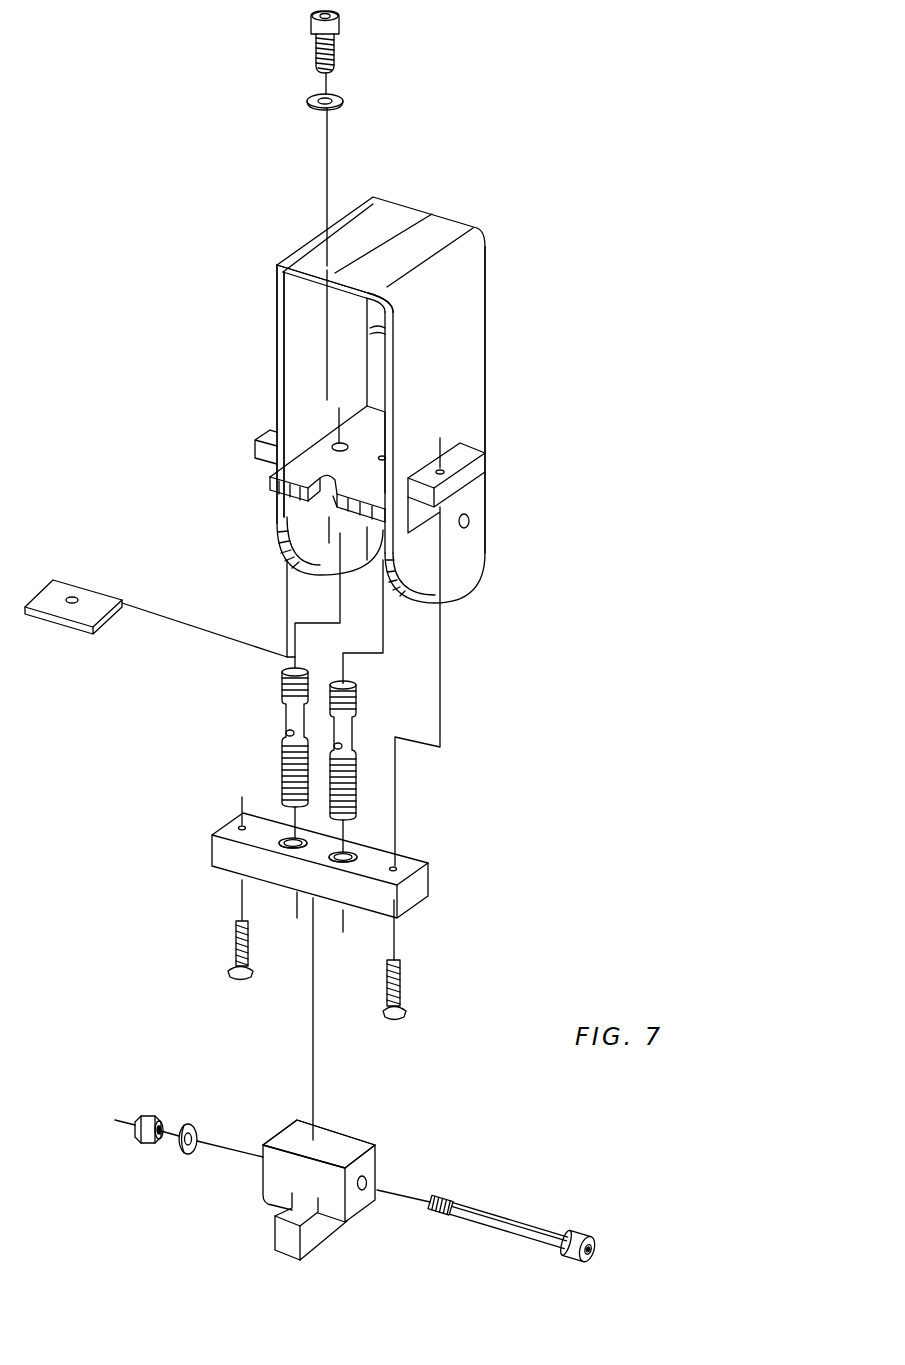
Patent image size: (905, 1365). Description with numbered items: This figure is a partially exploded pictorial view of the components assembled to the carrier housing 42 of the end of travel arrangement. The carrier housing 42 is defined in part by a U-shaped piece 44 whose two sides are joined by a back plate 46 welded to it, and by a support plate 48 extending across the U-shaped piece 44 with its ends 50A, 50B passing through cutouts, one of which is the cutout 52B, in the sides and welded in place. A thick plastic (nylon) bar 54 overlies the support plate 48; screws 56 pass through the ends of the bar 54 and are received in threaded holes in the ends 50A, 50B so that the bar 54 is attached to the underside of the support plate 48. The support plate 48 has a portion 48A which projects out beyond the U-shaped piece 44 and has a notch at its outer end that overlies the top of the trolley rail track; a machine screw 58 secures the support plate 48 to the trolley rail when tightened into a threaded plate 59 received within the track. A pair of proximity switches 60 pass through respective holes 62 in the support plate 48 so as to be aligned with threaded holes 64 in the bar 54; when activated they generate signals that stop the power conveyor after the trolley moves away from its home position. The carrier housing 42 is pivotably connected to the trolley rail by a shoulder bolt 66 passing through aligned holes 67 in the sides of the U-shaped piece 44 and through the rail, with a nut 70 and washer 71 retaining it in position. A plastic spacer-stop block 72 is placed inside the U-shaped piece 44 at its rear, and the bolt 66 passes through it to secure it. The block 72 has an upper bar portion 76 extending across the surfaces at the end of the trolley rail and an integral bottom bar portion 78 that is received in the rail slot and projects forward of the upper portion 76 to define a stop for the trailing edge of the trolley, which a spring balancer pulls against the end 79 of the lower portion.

The carrier housing 42 is at (427, 221).
The U-shaped piece 44 is at (470, 288).
The back plate 46 is at (375, 343).
The support plate 48 is at (362, 403).
The portion of support plate 48A is at (290, 471).
The end of support plate 50A is at (257, 437).
The end of support plate 50B is at (470, 457).
The cutout 52B is at (413, 528).
The thick plastic bar 54 is at (217, 869).
The screws 56 is at (318, 493).
The machine screw 58 is at (310, 22).
The threaded plate 59 is at (73, 620).
The proximity switches 60 is at (337, 733).
The holes in support plate 62 is at (383, 457).
The threaded holes 64 is at (292, 840).
The shoulder bolt 66 is at (497, 1210).
The holes in sides of U-shaped piece 67 is at (470, 525).
The nut 70 is at (150, 1115).
The washer 71 is at (188, 1123).
The spacer-stop block 72 is at (283, 1169).
The upper bar portion 76 is at (340, 1143).
The bottom bar portion 78 is at (322, 1233).
The end of spacer stop block lower portion 79 is at (283, 1238).